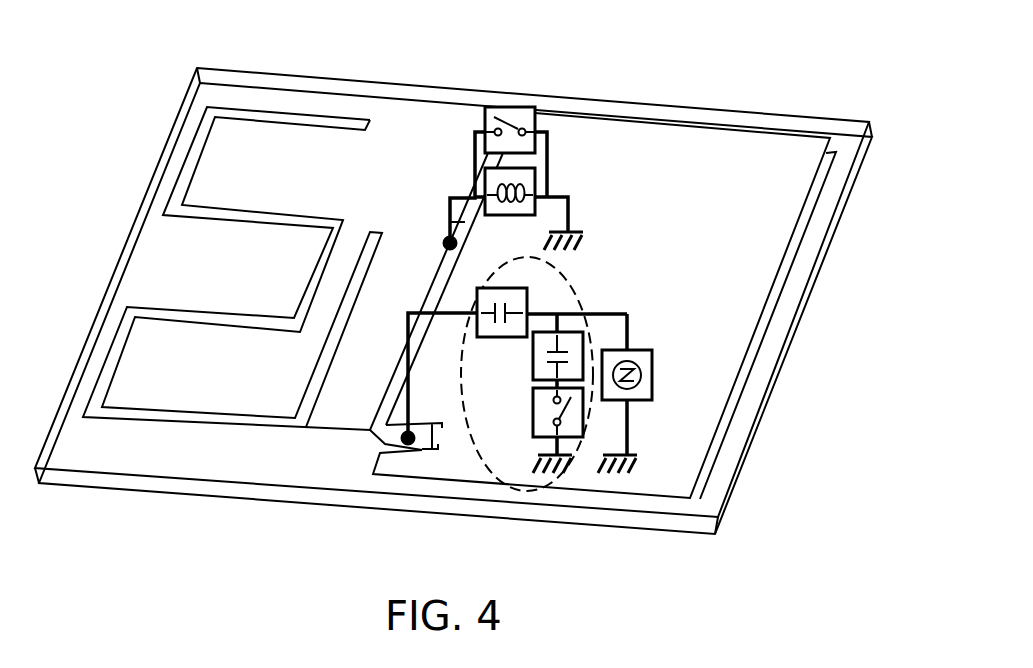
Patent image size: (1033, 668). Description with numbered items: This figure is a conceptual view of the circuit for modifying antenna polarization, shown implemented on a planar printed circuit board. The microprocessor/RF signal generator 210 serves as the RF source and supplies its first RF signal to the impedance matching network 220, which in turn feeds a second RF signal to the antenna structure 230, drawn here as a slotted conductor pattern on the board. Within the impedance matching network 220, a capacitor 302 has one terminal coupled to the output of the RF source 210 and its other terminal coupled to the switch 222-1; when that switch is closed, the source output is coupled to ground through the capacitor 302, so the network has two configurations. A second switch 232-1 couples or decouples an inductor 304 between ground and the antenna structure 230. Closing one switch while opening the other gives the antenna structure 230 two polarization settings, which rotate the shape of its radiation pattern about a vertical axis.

The antenna structure 230 is at (303, 128).
The switch 232-1 is at (523, 106).
The inductor 304 is at (522, 183).
The impedance matching network 220 is at (575, 282).
The capacitor 302 is at (582, 331).
The switch 222-1 is at (536, 437).
The microprocessor/RF signal generator 210 is at (648, 350).